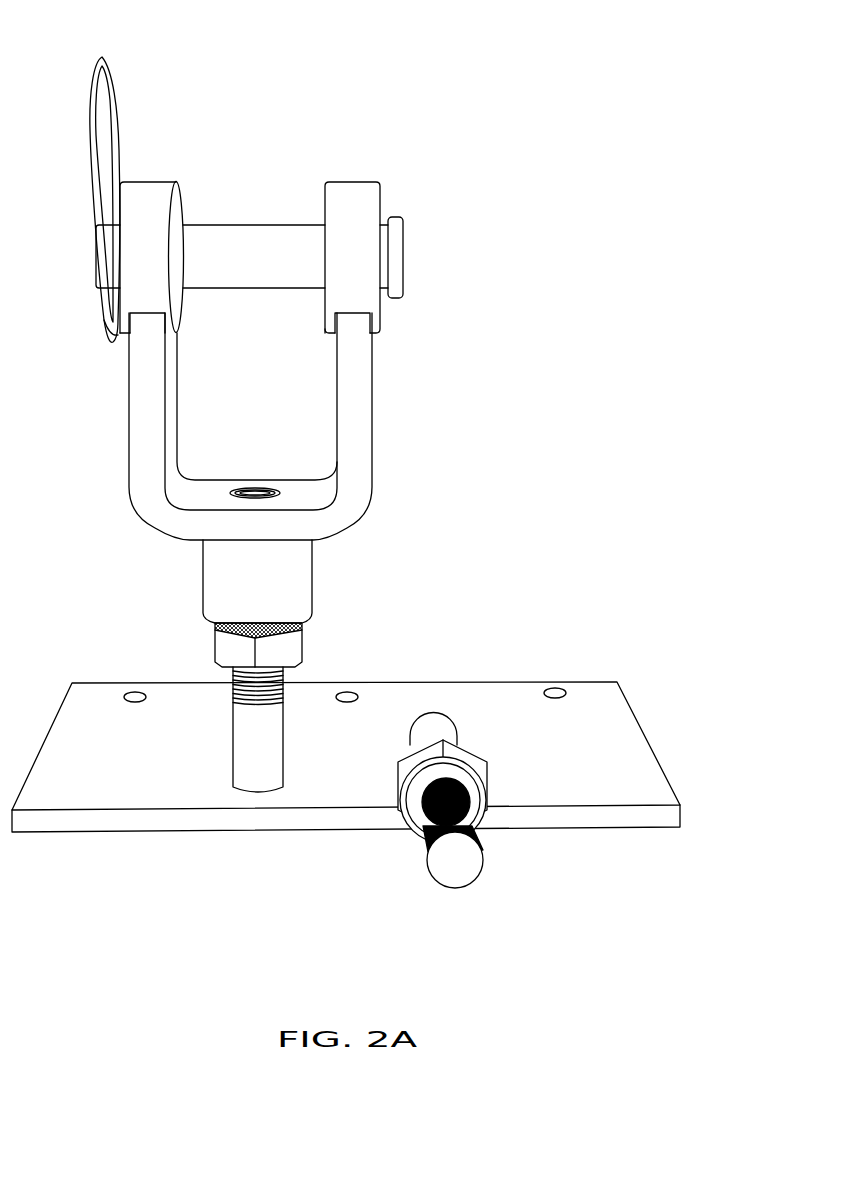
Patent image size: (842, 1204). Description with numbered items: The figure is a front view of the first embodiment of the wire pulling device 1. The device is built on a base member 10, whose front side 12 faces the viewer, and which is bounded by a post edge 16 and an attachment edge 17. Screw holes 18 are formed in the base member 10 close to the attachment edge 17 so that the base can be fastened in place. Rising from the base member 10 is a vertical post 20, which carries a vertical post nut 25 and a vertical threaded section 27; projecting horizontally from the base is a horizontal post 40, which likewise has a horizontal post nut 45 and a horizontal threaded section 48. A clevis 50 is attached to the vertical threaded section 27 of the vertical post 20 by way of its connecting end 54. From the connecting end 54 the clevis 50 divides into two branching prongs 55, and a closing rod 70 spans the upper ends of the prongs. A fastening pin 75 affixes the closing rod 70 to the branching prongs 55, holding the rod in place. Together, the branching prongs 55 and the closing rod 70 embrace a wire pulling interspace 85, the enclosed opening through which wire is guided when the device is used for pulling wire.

The wire pulling device 1 is at (38, 552).
The base member 10 is at (369, 751).
The front side 12 is at (622, 742).
The post edge 16 is at (593, 817).
The attachment edge 17 is at (476, 682).
The screw holes 18 is at (135, 691).
The vertical post 20 is at (305, 672).
The vertical post nut 25 is at (227, 650).
The vertical threaded section 27 is at (233, 692).
The horizontal post 40 is at (403, 863).
The horizontal post nut 45 is at (412, 763).
The horizontal threaded section 48 is at (423, 843).
The clevis 50 is at (412, 419).
The connecting end 54 is at (297, 572).
The branching prongs 55 is at (147, 452).
The closing rod 70 is at (253, 240).
The fastening pin 75 is at (102, 53).
The wire pulling interspace 85 is at (250, 420).